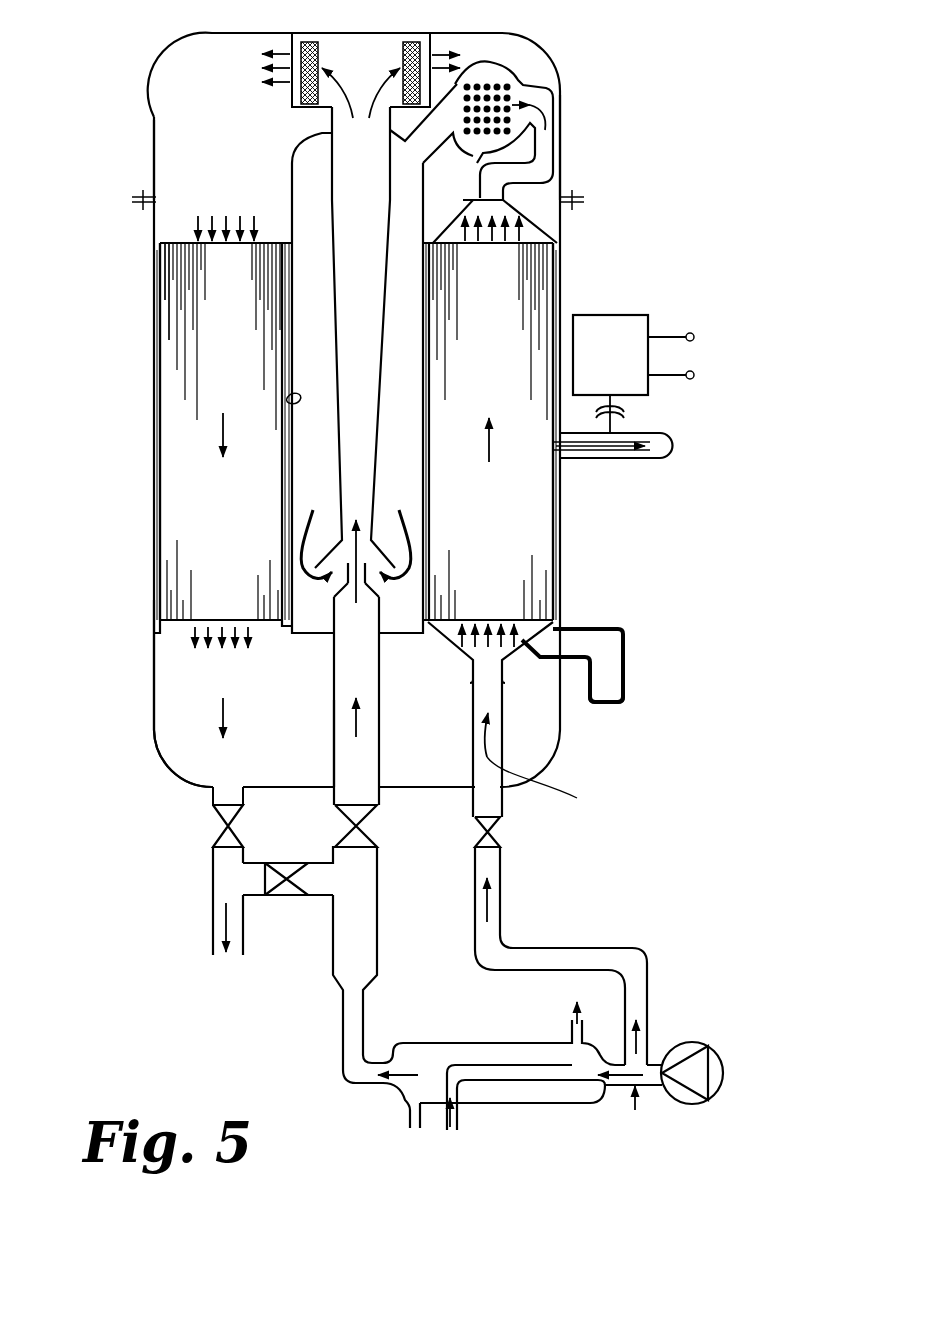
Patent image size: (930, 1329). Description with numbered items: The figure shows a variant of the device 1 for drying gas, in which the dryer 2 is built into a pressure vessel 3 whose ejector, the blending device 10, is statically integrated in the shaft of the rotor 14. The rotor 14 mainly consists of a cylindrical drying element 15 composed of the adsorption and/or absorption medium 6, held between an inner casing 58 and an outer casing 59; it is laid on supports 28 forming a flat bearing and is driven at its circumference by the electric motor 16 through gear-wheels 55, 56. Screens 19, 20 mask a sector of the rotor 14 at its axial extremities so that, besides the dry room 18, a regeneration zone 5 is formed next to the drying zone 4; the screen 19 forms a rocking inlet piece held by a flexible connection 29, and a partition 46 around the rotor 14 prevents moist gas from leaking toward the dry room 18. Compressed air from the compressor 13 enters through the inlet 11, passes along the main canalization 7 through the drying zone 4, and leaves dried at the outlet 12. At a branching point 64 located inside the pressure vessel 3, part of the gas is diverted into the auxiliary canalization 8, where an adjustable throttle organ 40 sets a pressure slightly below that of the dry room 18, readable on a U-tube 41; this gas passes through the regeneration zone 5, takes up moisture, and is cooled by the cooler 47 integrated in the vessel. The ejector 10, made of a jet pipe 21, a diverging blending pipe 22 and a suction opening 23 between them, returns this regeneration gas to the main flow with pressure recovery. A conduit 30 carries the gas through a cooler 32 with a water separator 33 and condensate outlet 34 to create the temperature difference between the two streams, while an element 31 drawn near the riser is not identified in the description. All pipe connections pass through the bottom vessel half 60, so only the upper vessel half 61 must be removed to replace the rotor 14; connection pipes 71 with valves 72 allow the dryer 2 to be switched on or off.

The device 1 is at (102, 864).
The dryer 2 is at (102, 57).
The pressure vessel 3 is at (561, 74).
The drying zone 4 is at (202, 473).
The regeneration zone 5 is at (506, 309).
The adsorption and/or absorption medium 6 is at (518, 553).
The main canalization 7 is at (381, 748).
The auxiliary canalization 8 is at (503, 803).
The blending device 10 is at (378, 522).
The inlet 11 is at (650, 1060).
The outlet 12 is at (213, 933).
The compressor 13 is at (704, 1046).
The rotor 14 is at (158, 306).
The cylindrical drying element 15 is at (212, 377).
The electric motor 16 is at (607, 322).
The dry room 18 is at (163, 732).
The screen 19 is at (596, 626).
The screen 20 is at (545, 224).
The jet pipe 21 is at (340, 586).
The blending pipe 22 is at (340, 463).
The suction opening 23 is at (328, 546).
The supports 28 is at (275, 612).
The flexible connection 29 is at (505, 680).
The conduit 30 is at (352, 1058).
The riser wall 31 is at (345, 760).
The cooler 32 is at (543, 1103).
The water separator 33 is at (397, 1097).
The condensate outlet 34 is at (410, 1115).
The adjustable throttle organ 40 is at (545, 768).
The U-tube 41 is at (610, 696).
The partition 46 is at (158, 262).
The cooler 47 is at (516, 72).
The gear-wheel 55 is at (665, 459).
The gear-wheel 56 is at (590, 455).
The inner casing 58 is at (290, 397).
The outer casing 59 is at (158, 367).
The bottom vessel half 60 is at (150, 652).
The upper vessel half 61 is at (153, 117).
The branching point 64 is at (622, 1109).
The connection pipes 71 is at (322, 885).
The valves 72 is at (220, 822).